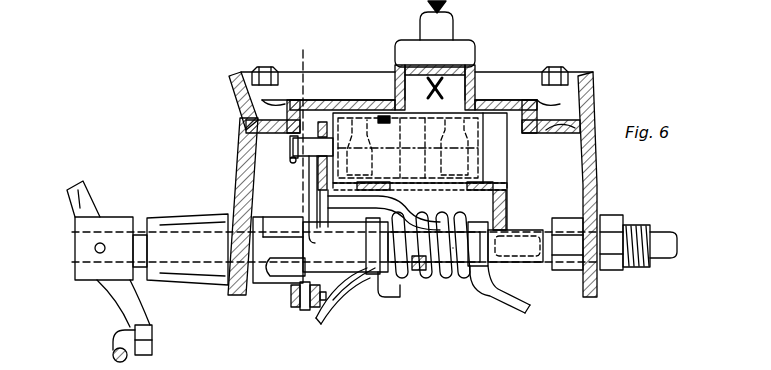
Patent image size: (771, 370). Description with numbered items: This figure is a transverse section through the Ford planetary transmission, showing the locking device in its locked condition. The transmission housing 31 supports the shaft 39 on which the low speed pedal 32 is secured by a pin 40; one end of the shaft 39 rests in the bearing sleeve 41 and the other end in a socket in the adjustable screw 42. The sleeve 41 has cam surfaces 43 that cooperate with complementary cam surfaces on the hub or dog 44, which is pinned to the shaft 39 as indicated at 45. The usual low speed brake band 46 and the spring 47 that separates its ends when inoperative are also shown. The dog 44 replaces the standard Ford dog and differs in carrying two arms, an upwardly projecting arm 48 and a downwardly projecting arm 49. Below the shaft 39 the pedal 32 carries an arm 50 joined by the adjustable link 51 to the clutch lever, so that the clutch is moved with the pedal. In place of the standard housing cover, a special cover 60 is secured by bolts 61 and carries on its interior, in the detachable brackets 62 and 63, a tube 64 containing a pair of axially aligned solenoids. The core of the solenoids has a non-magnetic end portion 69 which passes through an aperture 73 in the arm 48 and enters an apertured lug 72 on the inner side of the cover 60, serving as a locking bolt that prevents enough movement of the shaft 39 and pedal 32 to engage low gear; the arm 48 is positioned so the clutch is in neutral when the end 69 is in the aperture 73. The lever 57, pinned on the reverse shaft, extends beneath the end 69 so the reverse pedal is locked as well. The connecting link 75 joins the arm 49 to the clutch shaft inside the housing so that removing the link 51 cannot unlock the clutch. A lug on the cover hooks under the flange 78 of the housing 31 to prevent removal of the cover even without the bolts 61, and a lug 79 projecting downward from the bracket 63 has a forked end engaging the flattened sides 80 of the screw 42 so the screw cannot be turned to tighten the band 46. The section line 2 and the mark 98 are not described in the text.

The section line 2 is at (318, 50).
The transmission housing 31 is at (243, 160).
The pedal 32 is at (86, 203).
The shaft 39 is at (140, 238).
The pin 40 is at (94, 247).
The bearing sleeve 41 is at (268, 222).
The adjustable screw 42 is at (630, 268).
The cam surfaces 43 is at (268, 272).
The hub or dog 44 is at (345, 290).
The pin 45 is at (392, 288).
The brake band 46 is at (506, 296).
The spring 47 is at (416, 220).
The arm 48 is at (326, 185).
The arm 49 is at (305, 311).
The arm 50 is at (125, 296).
The adjustable link 51 is at (113, 345).
The lever 57 is at (309, 192).
The cover 60 is at (597, 82).
The bolts 61 is at (263, 68).
The bracket 62 is at (380, 186).
The bracket 63 is at (470, 186).
The tube 64 is at (497, 165).
The end portion 69 is at (302, 140).
The lug 72 is at (291, 160).
The aperture 73 is at (318, 141).
The connecting link 75 is at (336, 300).
The flange 78 is at (557, 135).
The lug 79 is at (506, 208).
The flattened sides 80 is at (528, 246).
The line 98 is at (490, 369).